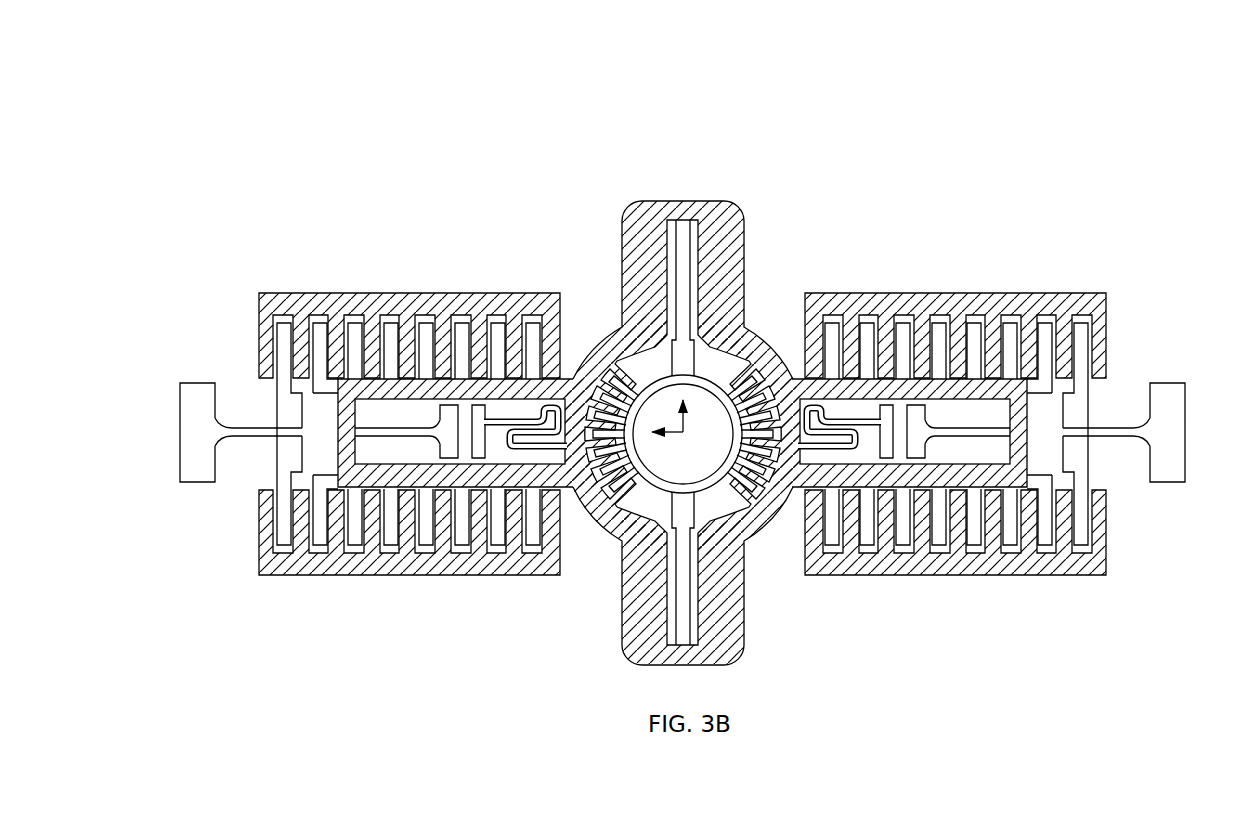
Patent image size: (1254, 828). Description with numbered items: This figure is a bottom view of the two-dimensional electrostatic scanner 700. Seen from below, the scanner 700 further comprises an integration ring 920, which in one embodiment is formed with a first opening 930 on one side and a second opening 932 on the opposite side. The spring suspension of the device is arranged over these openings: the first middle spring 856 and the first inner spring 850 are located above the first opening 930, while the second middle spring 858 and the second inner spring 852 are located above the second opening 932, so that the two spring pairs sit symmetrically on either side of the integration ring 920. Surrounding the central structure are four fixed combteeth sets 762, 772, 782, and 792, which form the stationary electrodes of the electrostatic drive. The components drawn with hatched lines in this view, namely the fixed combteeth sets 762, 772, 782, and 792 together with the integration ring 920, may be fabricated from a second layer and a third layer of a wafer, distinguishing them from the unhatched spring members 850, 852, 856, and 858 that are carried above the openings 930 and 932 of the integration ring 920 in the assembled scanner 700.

The two-dimensional electrostatic scanner 700 is at (308, 88).
The fixed combteeth set 762 is at (244, 336).
The fixed combteeth set 772 is at (1122, 336).
The fixed combteeth set 792 is at (244, 542).
The fixed combteeth set 782 is at (1122, 542).
The first inner spring 850 is at (518, 431).
The second inner spring 852 is at (847, 432).
The first middle spring 856 is at (393, 432).
The second middle spring 858 is at (978, 431).
The integration ring 920 is at (737, 262).
The first opening 930 is at (413, 408).
The second opening 932 is at (955, 408).